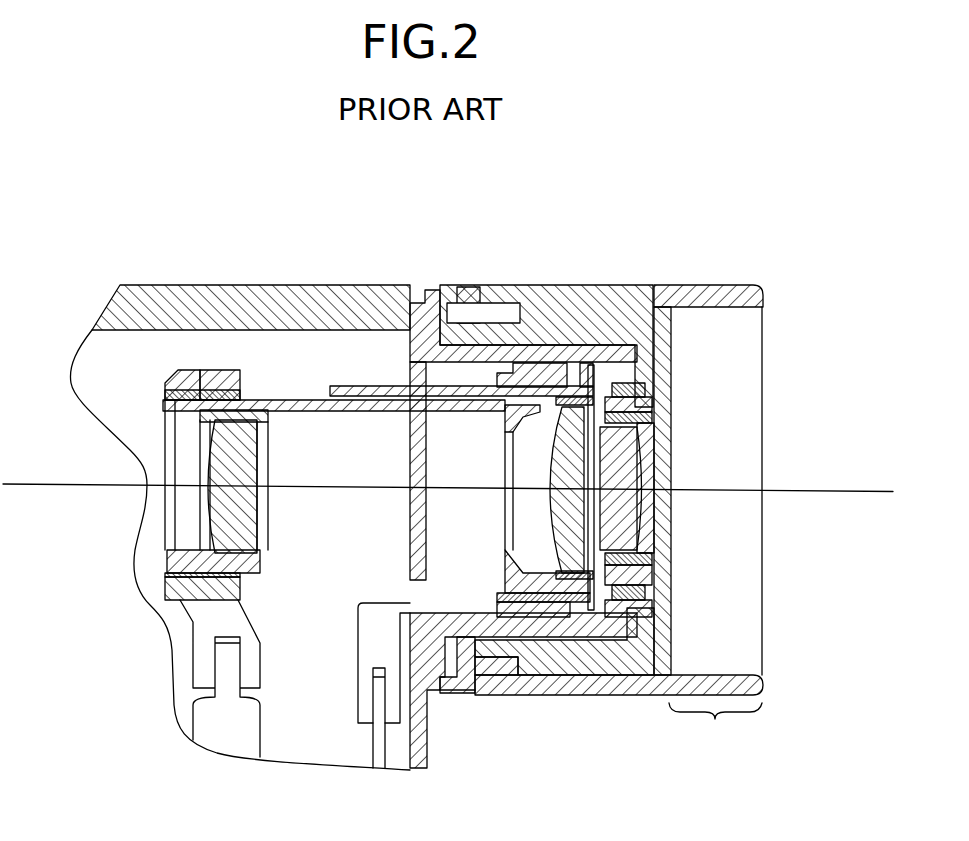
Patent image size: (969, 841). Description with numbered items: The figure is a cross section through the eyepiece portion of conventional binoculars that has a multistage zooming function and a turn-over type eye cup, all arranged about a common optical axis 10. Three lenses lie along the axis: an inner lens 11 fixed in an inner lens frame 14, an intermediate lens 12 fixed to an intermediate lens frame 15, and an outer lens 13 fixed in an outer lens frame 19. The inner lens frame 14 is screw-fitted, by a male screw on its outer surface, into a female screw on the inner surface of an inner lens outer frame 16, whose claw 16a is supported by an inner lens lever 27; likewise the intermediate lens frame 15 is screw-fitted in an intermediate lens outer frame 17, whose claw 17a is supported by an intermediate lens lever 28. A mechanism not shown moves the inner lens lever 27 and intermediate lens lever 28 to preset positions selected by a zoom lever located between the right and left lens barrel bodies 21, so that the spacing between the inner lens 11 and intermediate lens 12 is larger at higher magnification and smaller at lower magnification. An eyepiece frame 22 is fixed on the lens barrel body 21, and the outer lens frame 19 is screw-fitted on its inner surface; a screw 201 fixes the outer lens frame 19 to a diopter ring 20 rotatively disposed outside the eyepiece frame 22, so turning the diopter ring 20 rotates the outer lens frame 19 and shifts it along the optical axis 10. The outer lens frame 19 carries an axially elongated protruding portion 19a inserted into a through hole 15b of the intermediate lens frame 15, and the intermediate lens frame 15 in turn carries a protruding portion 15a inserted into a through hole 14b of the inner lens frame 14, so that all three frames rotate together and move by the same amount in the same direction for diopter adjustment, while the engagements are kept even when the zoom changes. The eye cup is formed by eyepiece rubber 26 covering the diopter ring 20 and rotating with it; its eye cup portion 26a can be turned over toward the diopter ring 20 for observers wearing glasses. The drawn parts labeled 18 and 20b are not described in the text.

The optical axis 10 is at (825, 492).
The inner lens 11 is at (262, 445).
The intermediate lens 12 is at (548, 497).
The outer lens 13 is at (650, 463).
The inner lens frame 14 is at (240, 398).
The through hole 14b is at (207, 385).
The intermediate lens frame 15 is at (525, 407).
The protruding portion 15a is at (305, 403).
The through hole 15b is at (558, 399).
The inner lens outer frame 16 is at (195, 605).
The claw 16a is at (205, 658).
The intermediate lens outer frame 17 is at (505, 600).
The claw 17a is at (363, 697).
The third lens holder 18 is at (650, 428).
The outer lens frame 19 is at (603, 370).
The protruding portion 19a is at (352, 387).
The diopter ring 20 is at (535, 320).
The barrel foot 20b is at (470, 694).
The lens barrel body 21 is at (150, 305).
The eyepiece frame 22 is at (428, 300).
The eyepiece rubber 26 is at (595, 692).
The eye cup portion 26a is at (715, 730).
The inner lens lever 27 is at (225, 737).
The intermediate lens lever 28 is at (378, 748).
The screw 201 is at (645, 388).